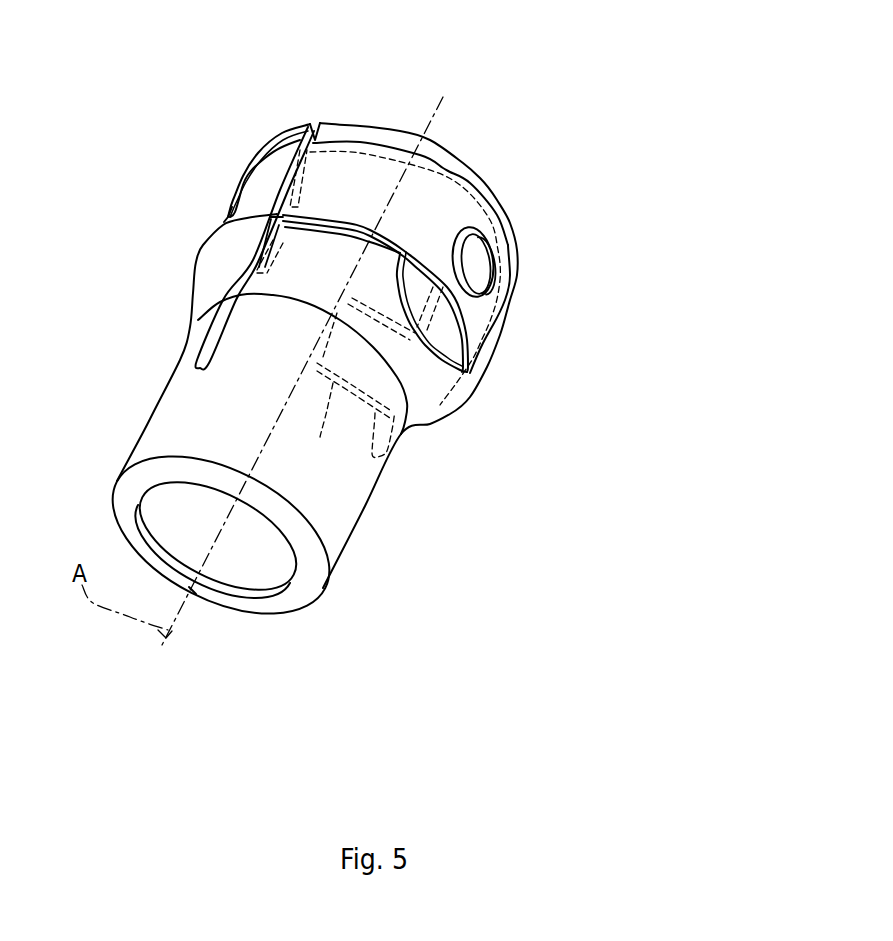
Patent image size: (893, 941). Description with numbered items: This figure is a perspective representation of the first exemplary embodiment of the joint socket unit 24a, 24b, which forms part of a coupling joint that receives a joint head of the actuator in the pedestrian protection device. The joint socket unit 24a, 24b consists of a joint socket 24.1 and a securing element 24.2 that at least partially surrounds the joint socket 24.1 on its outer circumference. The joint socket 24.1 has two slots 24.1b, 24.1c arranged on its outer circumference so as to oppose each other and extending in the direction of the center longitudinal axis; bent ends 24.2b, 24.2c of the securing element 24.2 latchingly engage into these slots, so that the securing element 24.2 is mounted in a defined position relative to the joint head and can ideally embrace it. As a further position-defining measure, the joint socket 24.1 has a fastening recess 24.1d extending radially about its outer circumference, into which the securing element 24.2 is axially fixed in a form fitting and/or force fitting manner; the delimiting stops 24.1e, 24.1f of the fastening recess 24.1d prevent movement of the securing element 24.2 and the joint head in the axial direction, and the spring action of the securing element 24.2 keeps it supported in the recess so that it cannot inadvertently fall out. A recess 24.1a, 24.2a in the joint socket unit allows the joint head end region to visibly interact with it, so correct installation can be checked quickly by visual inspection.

The joint socket 24.1 is at (360, 490).
The securing element 24.2 is at (440, 197).
The recess 24.1a is at (493, 287).
The slot 24.1b is at (210, 310).
The slot 24.1c is at (405, 438).
The fastening recess 24.1d is at (250, 200).
The delimiting stop 24.1e is at (232, 217).
The delimiting stop 24.1f is at (250, 165).
The recess 24.2a is at (493, 268).
The bent end 24.2b is at (263, 240).
The bent end 24.2c is at (338, 393).
The joint socket unit 24a is at (602, 198).
The joint socket unit 24b is at (432, 309).